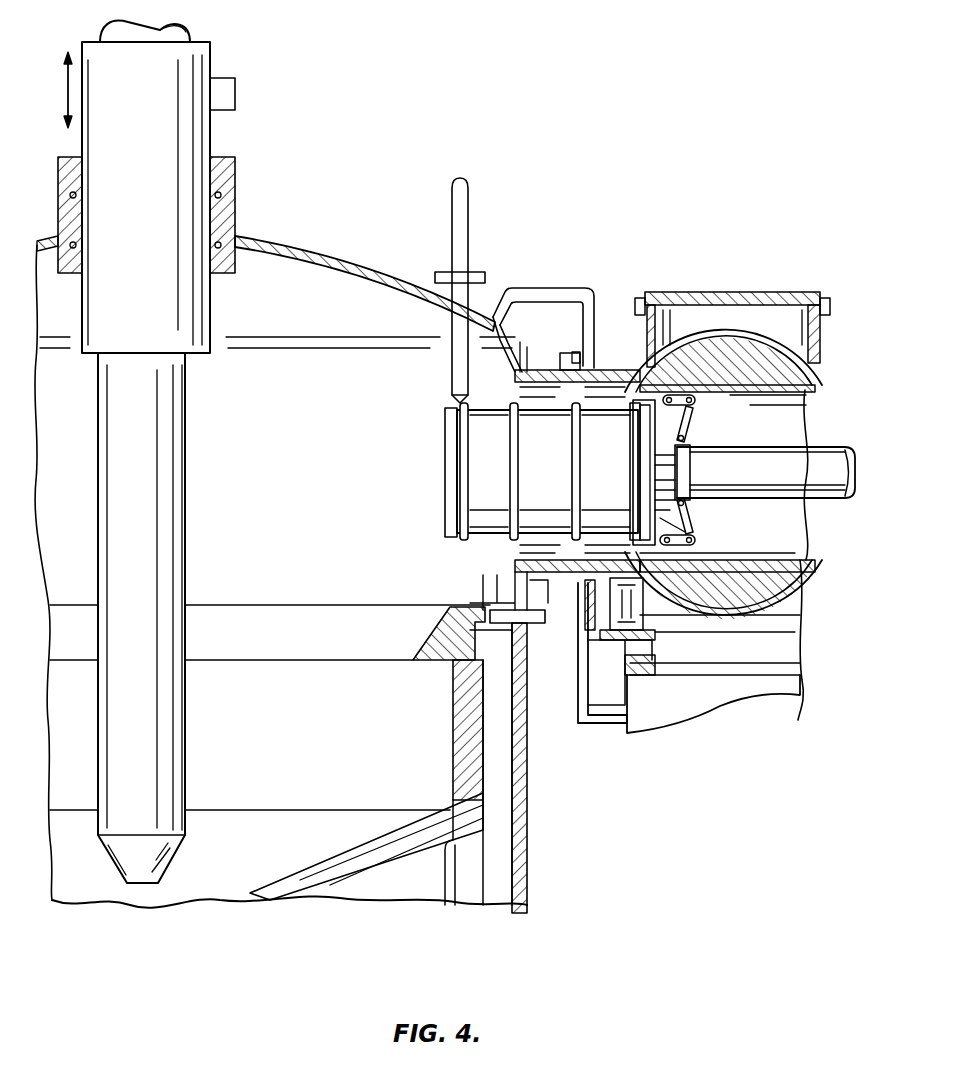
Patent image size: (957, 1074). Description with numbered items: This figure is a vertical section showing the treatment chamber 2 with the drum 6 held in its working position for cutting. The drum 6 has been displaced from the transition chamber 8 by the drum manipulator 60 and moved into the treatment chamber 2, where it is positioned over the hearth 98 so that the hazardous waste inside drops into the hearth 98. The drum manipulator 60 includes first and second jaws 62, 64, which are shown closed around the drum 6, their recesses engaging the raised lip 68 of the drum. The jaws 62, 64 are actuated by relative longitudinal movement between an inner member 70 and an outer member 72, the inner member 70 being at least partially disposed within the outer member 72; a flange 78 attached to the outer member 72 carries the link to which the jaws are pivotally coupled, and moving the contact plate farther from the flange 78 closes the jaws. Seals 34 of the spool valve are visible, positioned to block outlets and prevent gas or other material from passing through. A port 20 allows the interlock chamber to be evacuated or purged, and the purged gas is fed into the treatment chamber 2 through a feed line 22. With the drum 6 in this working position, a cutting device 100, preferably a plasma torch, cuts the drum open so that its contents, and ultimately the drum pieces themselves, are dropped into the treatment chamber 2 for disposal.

The treatment chamber 2 is at (298, 246).
The drum 6 is at (483, 520).
The transition chamber 8 is at (790, 525).
The port 20 is at (645, 716).
The feed line 22 is at (582, 725).
The seals 34 is at (715, 350).
The drum manipulator 60 is at (790, 456).
The first jaw 62 is at (682, 406).
The second jaw 64 is at (697, 524).
The raised lip 68 is at (636, 450).
The inner member 70 is at (670, 516).
The outer member 72 is at (735, 446).
The flange 78 is at (690, 468).
The hearth 98 is at (310, 876).
The cutting device 100 is at (470, 244).